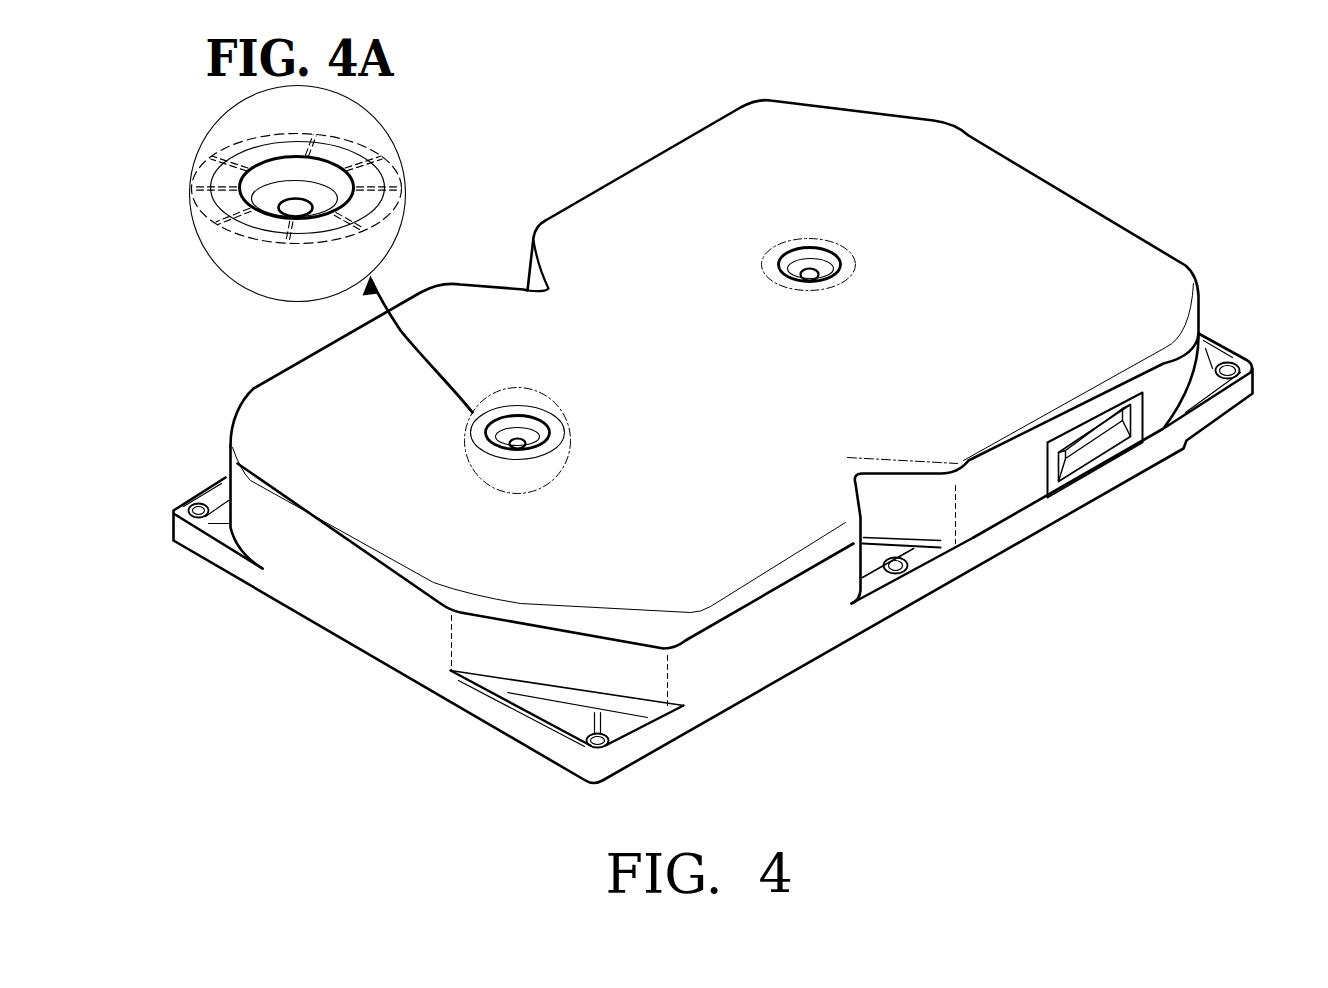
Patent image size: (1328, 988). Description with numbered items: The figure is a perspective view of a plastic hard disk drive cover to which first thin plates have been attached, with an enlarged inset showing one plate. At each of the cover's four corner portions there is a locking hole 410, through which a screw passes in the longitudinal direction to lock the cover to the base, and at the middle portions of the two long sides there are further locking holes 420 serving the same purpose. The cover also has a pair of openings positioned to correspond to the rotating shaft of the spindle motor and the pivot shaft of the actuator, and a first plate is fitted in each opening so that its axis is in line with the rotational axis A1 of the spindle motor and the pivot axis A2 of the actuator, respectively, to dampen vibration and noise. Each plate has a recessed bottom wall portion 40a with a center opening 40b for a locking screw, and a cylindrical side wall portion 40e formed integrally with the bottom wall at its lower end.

The locking holes 410 is at (197, 506).
The locking holes 420 is at (913, 567).
The recessed bottom wall portion 40a is at (498, 440).
The center opening 40b is at (543, 438).
The cylindrical side wall portion 40e is at (537, 430).
The rotational axis A1 is at (808, 262).
The pivot axis A2 is at (518, 440).